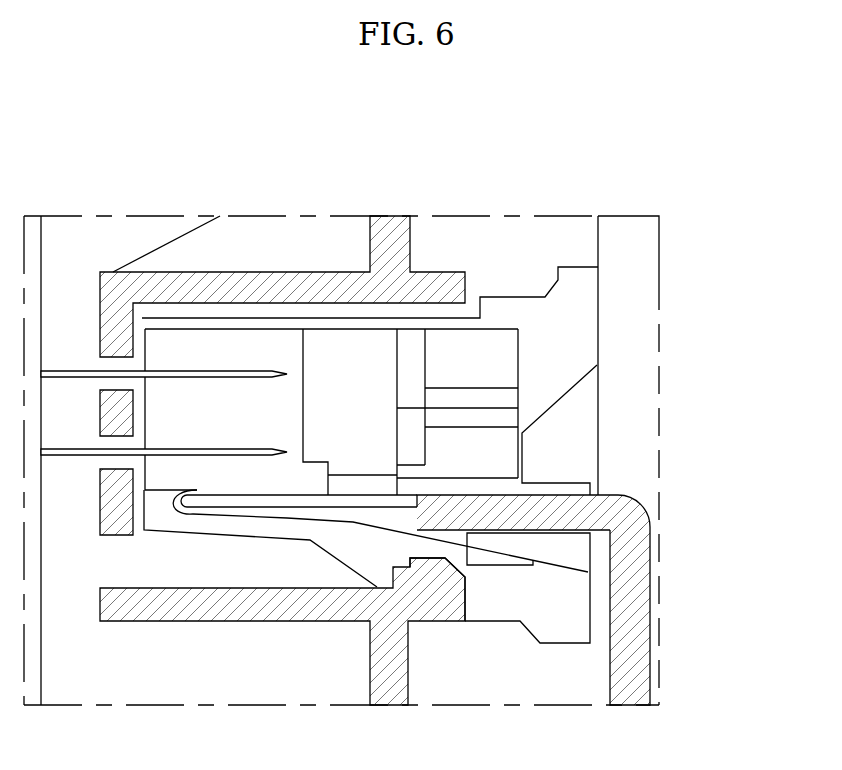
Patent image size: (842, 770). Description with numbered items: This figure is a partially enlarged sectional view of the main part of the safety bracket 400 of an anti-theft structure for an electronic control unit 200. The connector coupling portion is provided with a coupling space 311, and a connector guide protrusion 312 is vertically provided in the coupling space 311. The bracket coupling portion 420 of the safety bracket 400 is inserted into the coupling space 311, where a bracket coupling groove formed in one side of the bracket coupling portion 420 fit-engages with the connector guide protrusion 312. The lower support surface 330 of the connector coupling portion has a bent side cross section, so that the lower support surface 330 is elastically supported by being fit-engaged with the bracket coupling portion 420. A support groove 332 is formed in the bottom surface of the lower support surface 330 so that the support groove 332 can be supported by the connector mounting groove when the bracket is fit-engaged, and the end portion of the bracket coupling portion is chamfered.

The electronic control unit 200 is at (519, 228).
The coupling space 311 is at (340, 376).
The connector guide protrusion 312 is at (352, 500).
The bracket coupling portion 420 is at (522, 508).
The safety bracket 400 is at (632, 663).
The lower support surface 330 is at (348, 548).
The support groove 332 is at (428, 572).